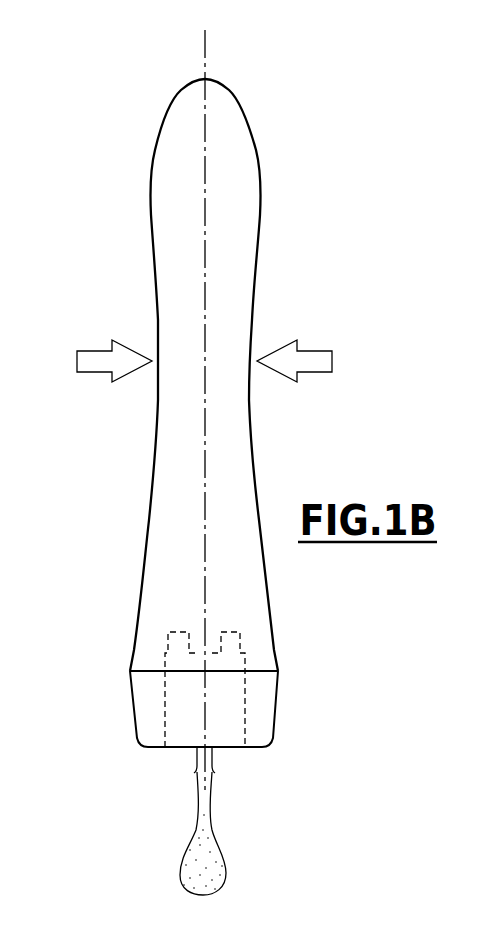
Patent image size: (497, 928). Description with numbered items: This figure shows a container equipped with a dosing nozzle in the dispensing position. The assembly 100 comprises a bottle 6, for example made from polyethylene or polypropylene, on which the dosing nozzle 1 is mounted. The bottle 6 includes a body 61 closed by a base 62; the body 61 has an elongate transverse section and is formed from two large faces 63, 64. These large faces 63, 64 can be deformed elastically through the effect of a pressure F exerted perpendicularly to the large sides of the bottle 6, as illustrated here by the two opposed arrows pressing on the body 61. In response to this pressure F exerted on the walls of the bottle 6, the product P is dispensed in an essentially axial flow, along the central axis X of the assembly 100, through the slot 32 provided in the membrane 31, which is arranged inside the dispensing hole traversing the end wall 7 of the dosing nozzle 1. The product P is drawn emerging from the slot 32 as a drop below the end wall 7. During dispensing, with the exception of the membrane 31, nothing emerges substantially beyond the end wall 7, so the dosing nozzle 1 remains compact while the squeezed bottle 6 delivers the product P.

The assembly 100 is at (210, 468).
The dosing nozzle 1 is at (206, 734).
The bottle 6 is at (140, 523).
The end wall 7 is at (150, 747).
The membrane 31 is at (228, 765).
The slot 32 is at (196, 775).
The body 61 is at (268, 238).
The base 62 is at (228, 90).
The large face 63 is at (157, 290).
The large face 64 is at (252, 310).
The product P is at (217, 862).
The longitudinal axis X is at (205, 50).
The pressure F is at (210, 361).